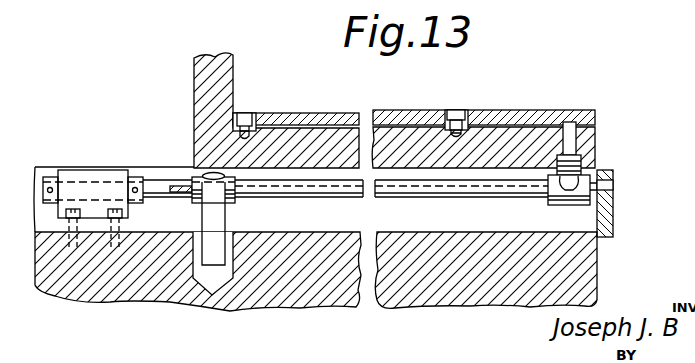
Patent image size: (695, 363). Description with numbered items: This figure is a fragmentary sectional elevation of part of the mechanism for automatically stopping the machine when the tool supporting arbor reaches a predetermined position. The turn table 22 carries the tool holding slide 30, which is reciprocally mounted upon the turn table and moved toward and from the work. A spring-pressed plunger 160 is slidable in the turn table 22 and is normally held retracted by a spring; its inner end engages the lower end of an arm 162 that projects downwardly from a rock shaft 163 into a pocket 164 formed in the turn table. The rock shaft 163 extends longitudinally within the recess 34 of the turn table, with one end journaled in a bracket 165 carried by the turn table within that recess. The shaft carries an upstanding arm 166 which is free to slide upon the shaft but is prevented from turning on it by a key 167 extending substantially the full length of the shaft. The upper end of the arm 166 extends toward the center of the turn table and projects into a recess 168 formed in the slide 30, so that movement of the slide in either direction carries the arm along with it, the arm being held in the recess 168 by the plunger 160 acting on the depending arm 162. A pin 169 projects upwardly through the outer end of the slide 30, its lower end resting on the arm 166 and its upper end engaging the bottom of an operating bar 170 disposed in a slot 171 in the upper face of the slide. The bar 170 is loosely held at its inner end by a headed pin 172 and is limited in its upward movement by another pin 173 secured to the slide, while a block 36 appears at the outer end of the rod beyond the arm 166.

The turn table 22 is at (135, 294).
The tool holding slide 30 is at (312, 138).
The recess 34 is at (461, 207).
The stop block 36 is at (617, 204).
The spring-pressed plunger 160 is at (188, 218).
The arm 162 is at (212, 214).
The rock shaft 163 is at (330, 203).
The pocket 164 is at (191, 321).
The bracket 165 is at (116, 142).
The upstanding arm 166 is at (533, 212).
The key 167 is at (463, 195).
The recess 168 is at (636, 134).
The pin 169 is at (640, 100).
The operating bar 170 is at (607, 68).
The slot 171 is at (545, 80).
The headed pin 172 is at (262, 80).
The pin 173 is at (468, 70).